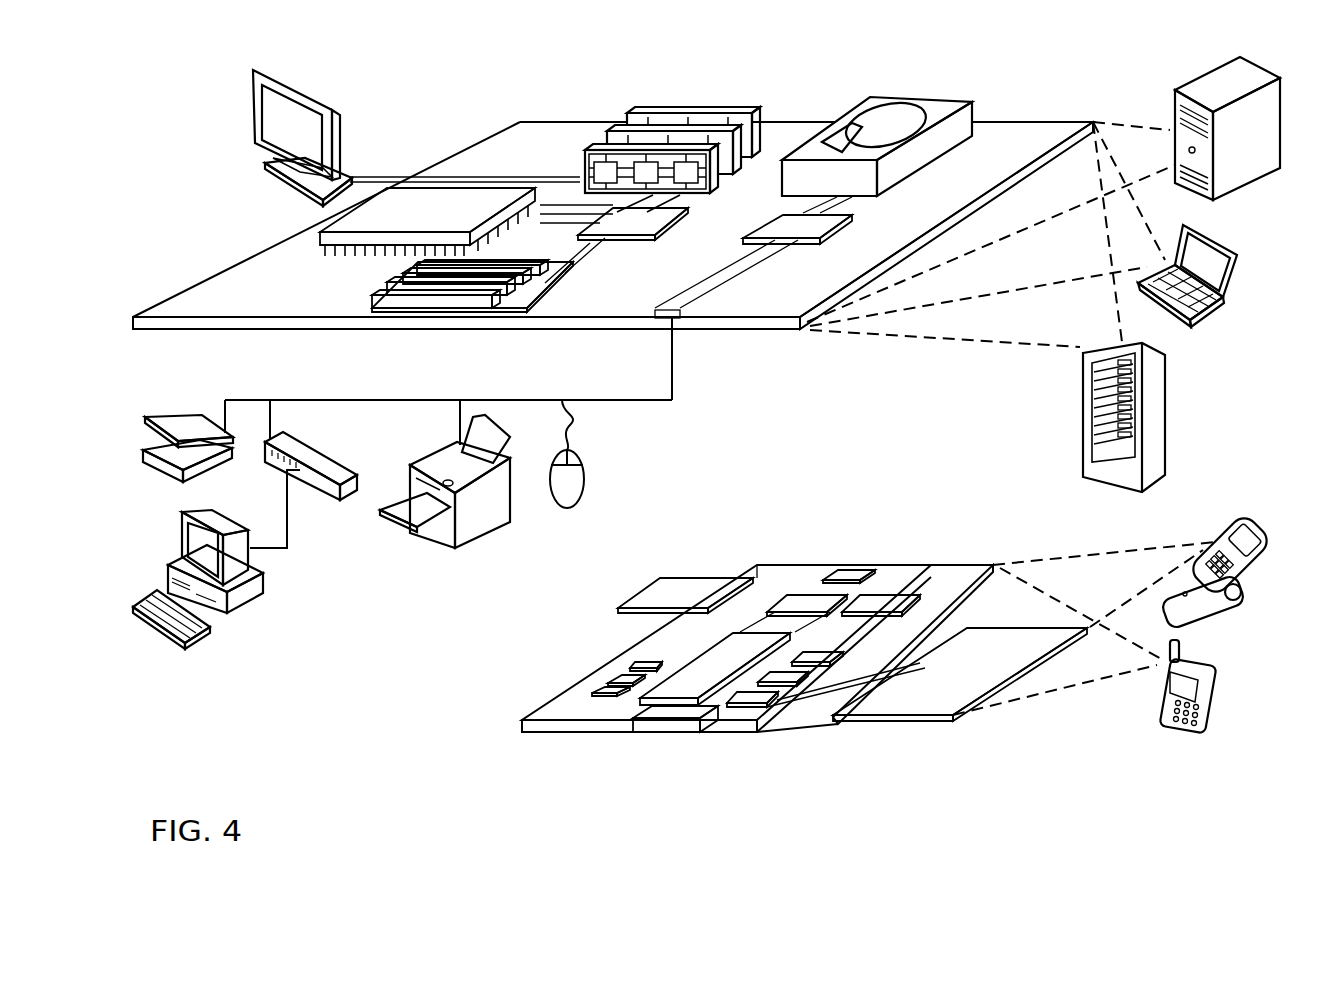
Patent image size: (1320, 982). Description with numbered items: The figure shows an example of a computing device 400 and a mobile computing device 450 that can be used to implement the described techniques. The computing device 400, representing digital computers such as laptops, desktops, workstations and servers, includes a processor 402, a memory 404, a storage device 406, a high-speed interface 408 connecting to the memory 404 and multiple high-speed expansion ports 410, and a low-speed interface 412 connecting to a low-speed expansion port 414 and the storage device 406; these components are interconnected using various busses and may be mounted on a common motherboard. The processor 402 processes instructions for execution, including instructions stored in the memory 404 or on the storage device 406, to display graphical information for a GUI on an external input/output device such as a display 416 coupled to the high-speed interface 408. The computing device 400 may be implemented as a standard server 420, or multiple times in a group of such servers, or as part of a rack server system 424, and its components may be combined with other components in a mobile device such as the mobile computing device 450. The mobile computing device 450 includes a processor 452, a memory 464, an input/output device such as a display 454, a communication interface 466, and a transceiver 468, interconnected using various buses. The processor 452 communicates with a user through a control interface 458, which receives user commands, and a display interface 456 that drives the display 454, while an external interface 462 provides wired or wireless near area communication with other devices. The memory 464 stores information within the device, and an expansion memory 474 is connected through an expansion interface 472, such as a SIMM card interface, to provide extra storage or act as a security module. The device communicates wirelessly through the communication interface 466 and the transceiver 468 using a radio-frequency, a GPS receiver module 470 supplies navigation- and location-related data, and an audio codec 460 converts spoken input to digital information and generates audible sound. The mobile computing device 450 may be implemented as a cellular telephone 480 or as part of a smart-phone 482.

The computing device 400 is at (444, 94).
The processor 402 is at (320, 237).
The memory 404 is at (640, 113).
The storage device 406 is at (873, 102).
The high-speed interface 408 is at (592, 212).
The high-speed expansion ports 410 is at (385, 288).
The low-speed interface 412 is at (780, 226).
The low-speed expansion port 414 is at (680, 318).
The display 416 is at (255, 70).
The standard server 420 is at (1163, 108).
The rack server system 424 is at (1083, 438).
The mobile computing device 450 is at (493, 737).
The processor 452 is at (692, 690).
The display 454 is at (922, 707).
The display interface 456 is at (757, 704).
The control interface 458 is at (790, 683).
The audio codec 460 is at (818, 655).
The external interface 462 is at (658, 722).
The memory 464 is at (595, 690).
The communication interface 466 is at (807, 600).
The transceiver 468 is at (882, 600).
The GPS receiver module 470 is at (858, 573).
The expansion interface 472 is at (755, 577).
The expansion memory 474 is at (665, 580).
The cellular telephone 480 is at (1218, 525).
The smart-phone 482 is at (1165, 695).